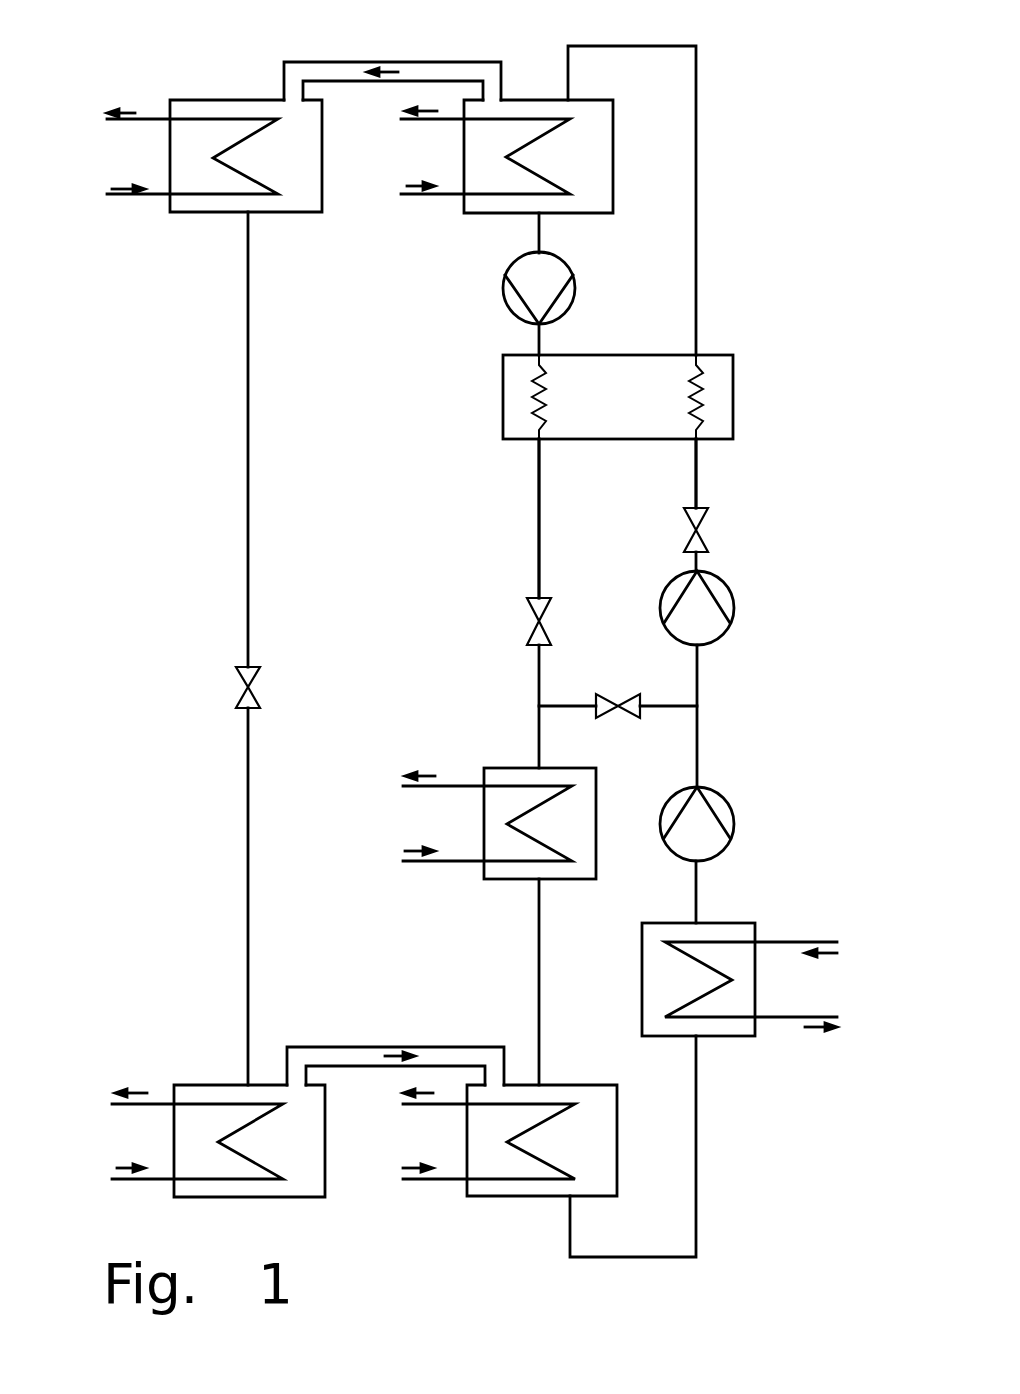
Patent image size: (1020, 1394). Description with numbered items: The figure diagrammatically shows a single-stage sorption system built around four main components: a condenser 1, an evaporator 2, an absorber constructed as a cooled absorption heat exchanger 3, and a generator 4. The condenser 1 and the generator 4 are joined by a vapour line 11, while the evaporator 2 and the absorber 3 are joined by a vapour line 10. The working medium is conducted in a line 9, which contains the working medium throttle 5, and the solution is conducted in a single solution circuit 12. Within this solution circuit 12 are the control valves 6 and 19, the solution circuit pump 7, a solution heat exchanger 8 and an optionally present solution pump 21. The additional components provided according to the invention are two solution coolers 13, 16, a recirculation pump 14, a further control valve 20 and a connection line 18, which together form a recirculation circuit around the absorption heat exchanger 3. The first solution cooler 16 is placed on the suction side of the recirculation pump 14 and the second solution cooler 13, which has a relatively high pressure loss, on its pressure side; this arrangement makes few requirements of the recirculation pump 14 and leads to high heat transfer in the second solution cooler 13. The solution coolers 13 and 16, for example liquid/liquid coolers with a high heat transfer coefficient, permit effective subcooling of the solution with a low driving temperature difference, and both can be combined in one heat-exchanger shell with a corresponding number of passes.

The condenser 1 is at (305, 207).
The evaporator 2 is at (327, 1190).
The absorption heat exchanger 3 is at (493, 1188).
The generator 4 is at (490, 215).
The working medium throttle 5 is at (238, 690).
The control valve 6 is at (530, 622).
The solution circuit pump 7 is at (740, 613).
The solution heat exchanger 8 is at (735, 363).
The line 9 is at (238, 485).
The vapour line 10 is at (377, 1045).
The vapour line 11 is at (362, 63).
The solution circuit 12 is at (703, 473).
The second solution cooler 13 is at (487, 882).
The recirculation pump 14 is at (745, 810).
The first solution cooler 16 is at (737, 927).
The connection line 18 is at (665, 715).
The control valve 19 is at (713, 530).
The further control valve 20 is at (627, 678).
The solution pump 21 is at (505, 313).